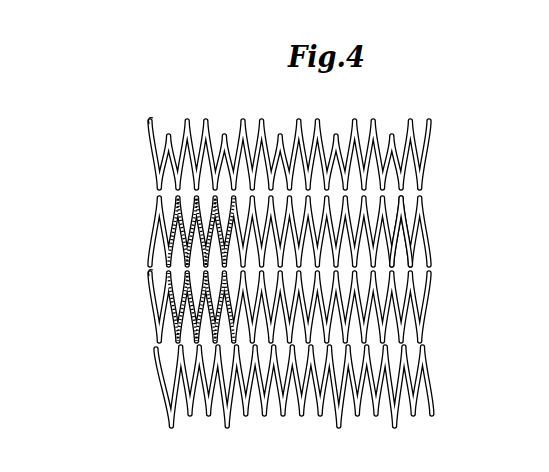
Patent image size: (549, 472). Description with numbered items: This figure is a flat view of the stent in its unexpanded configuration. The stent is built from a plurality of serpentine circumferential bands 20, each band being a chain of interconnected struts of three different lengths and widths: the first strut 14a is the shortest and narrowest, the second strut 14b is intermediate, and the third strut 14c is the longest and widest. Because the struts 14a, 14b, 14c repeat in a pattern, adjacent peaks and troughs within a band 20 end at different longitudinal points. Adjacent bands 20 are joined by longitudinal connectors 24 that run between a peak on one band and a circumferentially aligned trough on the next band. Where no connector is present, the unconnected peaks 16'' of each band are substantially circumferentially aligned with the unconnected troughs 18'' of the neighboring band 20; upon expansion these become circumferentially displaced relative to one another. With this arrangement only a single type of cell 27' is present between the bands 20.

The serpentine circumferential band 20 is at (150, 222).
The cell 27' is at (289, 128).
The unconnected trough 18'' is at (321, 217).
The unconnected peak 16'' is at (442, 231).
The longitudinal connector 24 is at (397, 280).
The first strut 14a is at (157, 284).
The second strut 14b is at (188, 250).
The third strut 14c is at (190, 228).